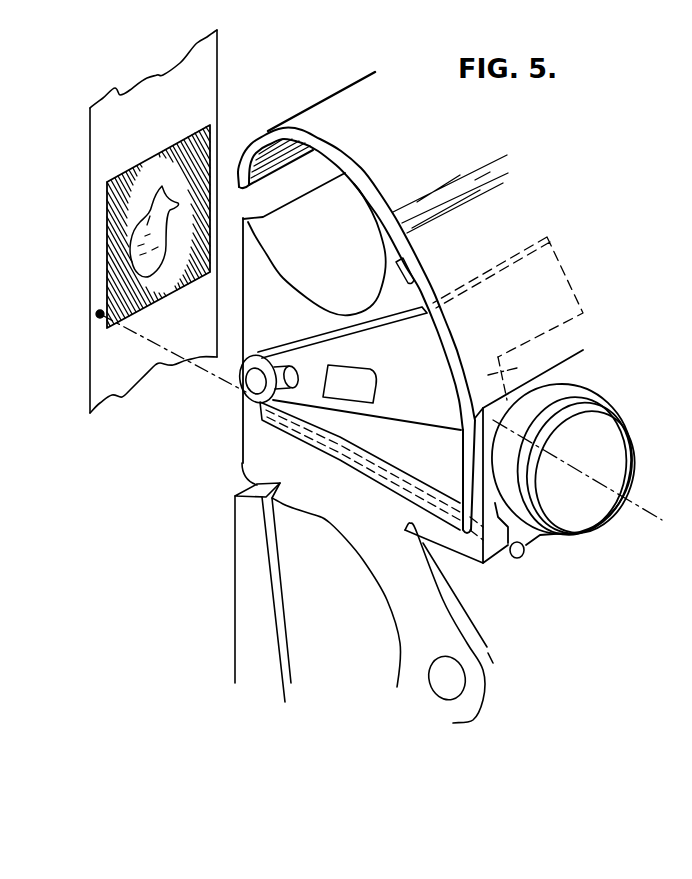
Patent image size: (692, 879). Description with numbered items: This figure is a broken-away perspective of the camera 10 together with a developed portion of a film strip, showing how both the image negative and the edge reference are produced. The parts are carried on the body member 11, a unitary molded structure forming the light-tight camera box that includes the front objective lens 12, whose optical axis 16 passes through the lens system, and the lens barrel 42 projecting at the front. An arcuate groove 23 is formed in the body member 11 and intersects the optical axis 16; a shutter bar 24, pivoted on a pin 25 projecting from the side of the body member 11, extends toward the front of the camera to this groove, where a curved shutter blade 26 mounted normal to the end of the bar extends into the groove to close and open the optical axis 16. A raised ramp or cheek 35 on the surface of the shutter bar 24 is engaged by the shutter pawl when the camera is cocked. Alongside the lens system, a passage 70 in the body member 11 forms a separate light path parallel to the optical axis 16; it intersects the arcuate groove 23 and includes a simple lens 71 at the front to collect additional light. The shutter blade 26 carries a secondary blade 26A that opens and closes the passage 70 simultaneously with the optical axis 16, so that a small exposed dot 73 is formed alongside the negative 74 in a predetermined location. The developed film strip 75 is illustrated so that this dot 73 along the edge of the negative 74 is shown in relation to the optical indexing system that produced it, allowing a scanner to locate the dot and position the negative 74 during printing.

The camera 10 is at (537, 192).
The body member 11 is at (329, 116).
The front objective lens 12 is at (617, 431).
The optical axis 16 is at (583, 470).
The arcuate groove 23 is at (410, 273).
The shutter bar 24 is at (430, 398).
The pin 25 is at (240, 388).
The curved shutter blade 26 is at (560, 285).
The secondary blade 26A is at (508, 366).
The cheek 35 is at (348, 378).
The lens barrel 42 is at (570, 388).
The passage 70 is at (392, 475).
The simple lens 71 is at (520, 558).
The dot 73 is at (96, 313).
The negative 74 is at (107, 202).
The developed film strip 75 is at (92, 150).